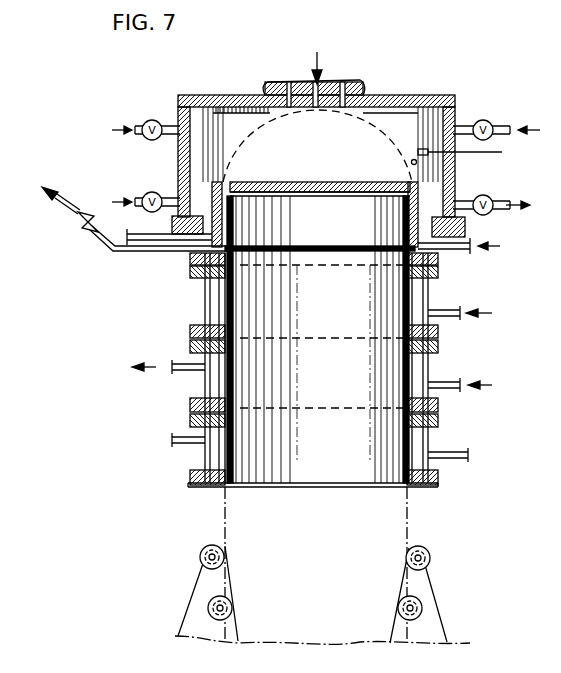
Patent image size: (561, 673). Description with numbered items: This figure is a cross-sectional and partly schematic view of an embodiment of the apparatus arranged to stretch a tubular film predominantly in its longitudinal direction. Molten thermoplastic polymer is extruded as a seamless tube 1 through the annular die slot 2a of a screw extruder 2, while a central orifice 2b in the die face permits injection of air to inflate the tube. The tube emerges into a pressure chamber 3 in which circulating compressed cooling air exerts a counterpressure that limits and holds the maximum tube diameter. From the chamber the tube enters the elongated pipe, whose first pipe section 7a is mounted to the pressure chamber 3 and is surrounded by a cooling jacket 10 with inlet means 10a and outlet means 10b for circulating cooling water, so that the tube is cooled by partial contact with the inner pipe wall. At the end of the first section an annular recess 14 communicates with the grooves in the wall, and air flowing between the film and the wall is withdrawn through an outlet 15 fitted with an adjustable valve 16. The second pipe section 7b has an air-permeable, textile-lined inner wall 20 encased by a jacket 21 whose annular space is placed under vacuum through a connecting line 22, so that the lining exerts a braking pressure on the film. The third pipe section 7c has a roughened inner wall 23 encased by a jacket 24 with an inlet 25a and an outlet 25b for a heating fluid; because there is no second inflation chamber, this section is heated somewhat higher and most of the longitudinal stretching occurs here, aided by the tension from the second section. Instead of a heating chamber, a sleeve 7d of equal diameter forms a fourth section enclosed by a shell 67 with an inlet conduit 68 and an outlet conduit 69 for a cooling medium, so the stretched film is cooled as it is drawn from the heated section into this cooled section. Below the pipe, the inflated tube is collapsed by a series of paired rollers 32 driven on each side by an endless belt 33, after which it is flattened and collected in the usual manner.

The seamless tube 1 is at (245, 128).
The screw extruder 2 is at (276, 86).
The annular die slot 2a is at (362, 88).
The central orifice 2b is at (320, 92).
The pressure chamber 3 is at (179, 156).
The first pipe section 7a is at (318, 226).
The second pipe section 7b is at (313, 306).
The third pipe section 7c is at (313, 382).
The fourth pipe section (sleeve) 7d is at (313, 456).
The cooling jacket 10 is at (420, 202).
The inlet means 10a is at (466, 249).
The outlet means 10b is at (148, 233).
The annular recess 14 is at (300, 253).
The outlet 15 is at (156, 252).
The adjustable valve 16 is at (84, 229).
The inner wall 20 is at (430, 292).
The jacket 21 is at (213, 295).
The connecting line 22 is at (455, 313).
The inner wall 23 is at (232, 380).
The jacket 24 is at (420, 371).
The inlet 25a is at (455, 386).
The outlet 25b is at (182, 368).
The paired rollers 32 is at (412, 605).
The endless belt 33 is at (445, 615).
The shell 67 is at (420, 441).
The inlet conduit 68 is at (452, 460).
The outlet conduit 69 is at (186, 446).